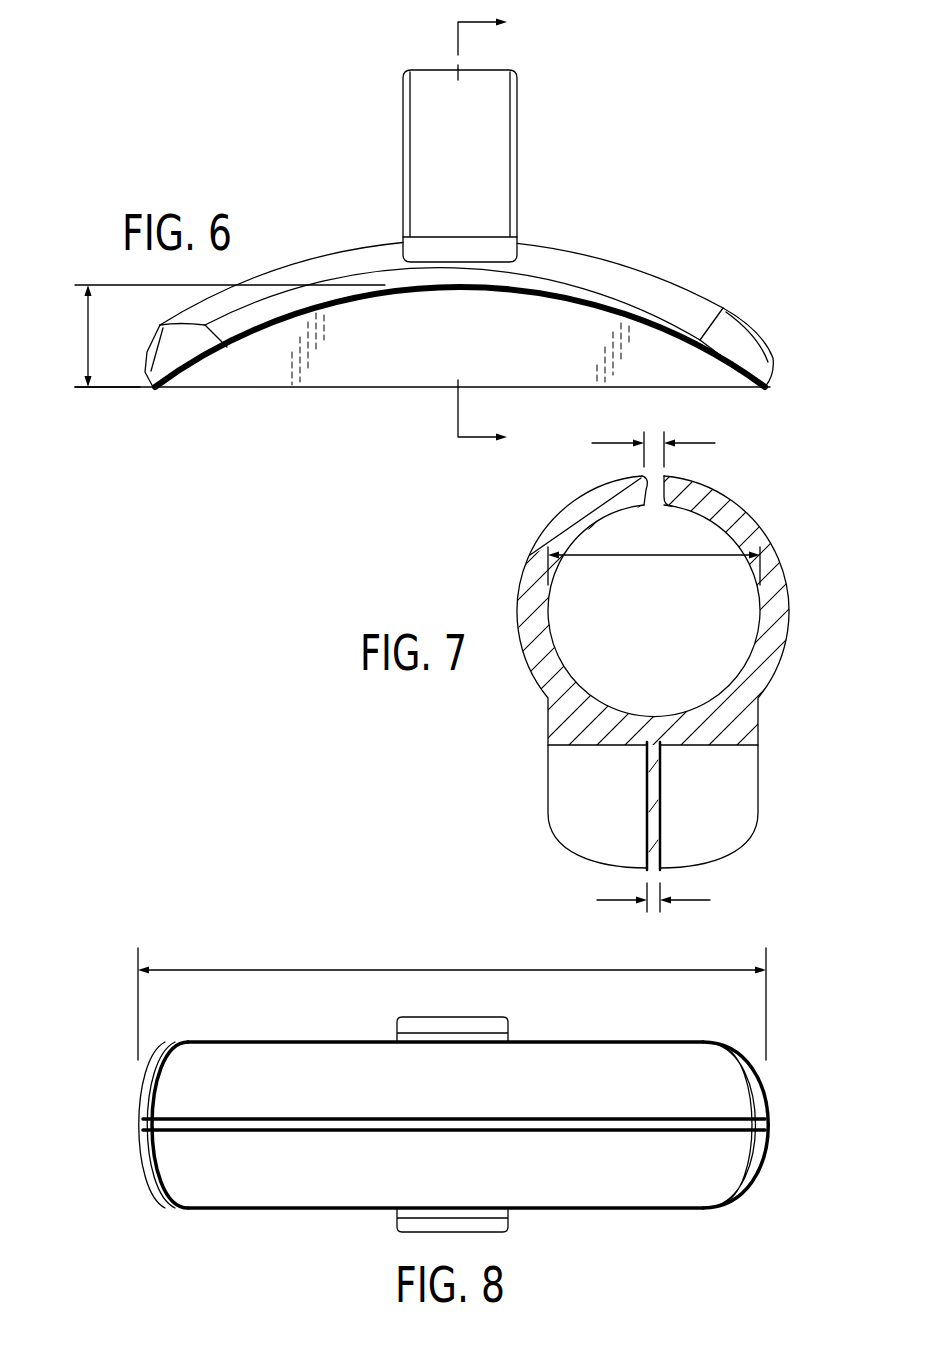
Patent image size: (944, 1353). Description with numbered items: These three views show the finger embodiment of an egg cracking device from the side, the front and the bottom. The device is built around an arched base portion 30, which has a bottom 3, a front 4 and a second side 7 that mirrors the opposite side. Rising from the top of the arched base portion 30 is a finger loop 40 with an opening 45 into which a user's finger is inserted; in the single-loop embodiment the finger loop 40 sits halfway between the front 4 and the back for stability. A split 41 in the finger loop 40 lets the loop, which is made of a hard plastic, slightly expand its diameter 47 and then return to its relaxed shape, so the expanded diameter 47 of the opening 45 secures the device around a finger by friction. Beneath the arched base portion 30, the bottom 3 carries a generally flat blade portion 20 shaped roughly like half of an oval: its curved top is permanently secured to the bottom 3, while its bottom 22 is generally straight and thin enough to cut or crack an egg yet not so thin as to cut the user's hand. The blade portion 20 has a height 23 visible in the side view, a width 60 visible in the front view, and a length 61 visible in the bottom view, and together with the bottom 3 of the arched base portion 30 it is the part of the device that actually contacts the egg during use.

In FIG. 6, the second side 7 is at (494, 229).
In FIG. 6, the bottom 22 is at (272, 389).
In FIG. 6, the height 23 is at (86, 335).
In FIG. 6, the arched base portion 30 is at (600, 290).
In FIG. 7, the finger loop 40 is at (730, 500).
In FIG. 7, the split 41 is at (655, 433).
In FIG. 7, the opening 45 is at (718, 633).
In FIG. 7, the diameter 47 is at (655, 560).
In FIG. 7, the bottom 3 is at (588, 750).
In FIG. 7, the front 4 is at (663, 770).
In FIG. 7, the blade portion 20 is at (657, 828).
In FIG. 7, the width 60 is at (653, 918).
In FIG. 8, the length 61 is at (455, 965).